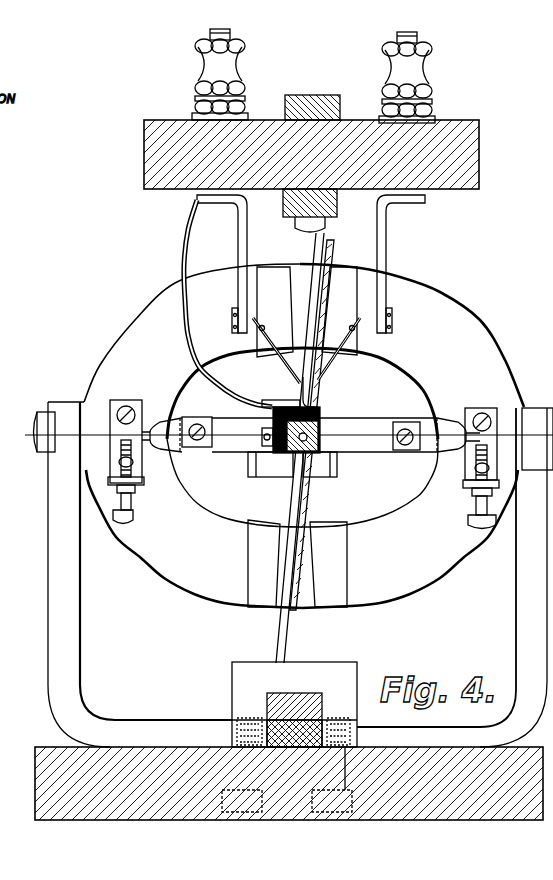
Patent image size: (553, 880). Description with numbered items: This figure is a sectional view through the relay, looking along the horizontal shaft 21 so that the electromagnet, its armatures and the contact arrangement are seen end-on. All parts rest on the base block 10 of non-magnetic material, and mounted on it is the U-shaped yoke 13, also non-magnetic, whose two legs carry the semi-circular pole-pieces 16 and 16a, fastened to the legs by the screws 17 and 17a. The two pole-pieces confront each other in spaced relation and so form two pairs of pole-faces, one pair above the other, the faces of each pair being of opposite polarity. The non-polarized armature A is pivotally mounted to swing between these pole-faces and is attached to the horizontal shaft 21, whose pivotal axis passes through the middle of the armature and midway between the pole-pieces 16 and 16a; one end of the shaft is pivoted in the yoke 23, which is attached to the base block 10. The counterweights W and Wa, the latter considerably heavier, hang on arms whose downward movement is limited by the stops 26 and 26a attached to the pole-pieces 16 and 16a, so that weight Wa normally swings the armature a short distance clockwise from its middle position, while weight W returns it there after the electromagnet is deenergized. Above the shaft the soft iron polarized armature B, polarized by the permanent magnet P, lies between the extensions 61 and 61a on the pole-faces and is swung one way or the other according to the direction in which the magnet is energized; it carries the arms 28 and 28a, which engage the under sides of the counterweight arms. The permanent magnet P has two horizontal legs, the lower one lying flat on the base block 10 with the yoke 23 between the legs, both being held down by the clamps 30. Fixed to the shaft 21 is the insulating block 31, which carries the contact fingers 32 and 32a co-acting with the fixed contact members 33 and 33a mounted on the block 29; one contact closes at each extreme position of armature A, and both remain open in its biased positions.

The base block 10 is at (540, 758).
The U-shaped yoke 13 is at (48, 605).
The pole-piece 16 is at (470, 325).
The pole-piece 16a is at (134, 320).
The screw 17 is at (552, 402).
The screw 17a is at (34, 452).
The horizontal shaft 21 is at (313, 440).
The yoke 23 is at (290, 205).
The stop 26 is at (476, 470).
The stop 26a is at (140, 455).
The arm 28 is at (338, 474).
The arm 28a is at (262, 478).
The block 29 is at (144, 179).
The clamp 30 is at (232, 676).
The insulating block 31 is at (263, 438).
The contact finger 32 is at (325, 365).
The contact finger 32a is at (283, 360).
The fixed contact member 33 is at (386, 294).
The fixed contact member 33a is at (238, 296).
The pole-face extension 61 is at (358, 280).
The pole-face extension 61a is at (248, 568).
The non-polarized armature A is at (350, 260).
The polarized armature B is at (313, 250).
The permanent magnet P is at (331, 95).
The counterweight W is at (406, 422).
The counterweight Wa is at (192, 417).